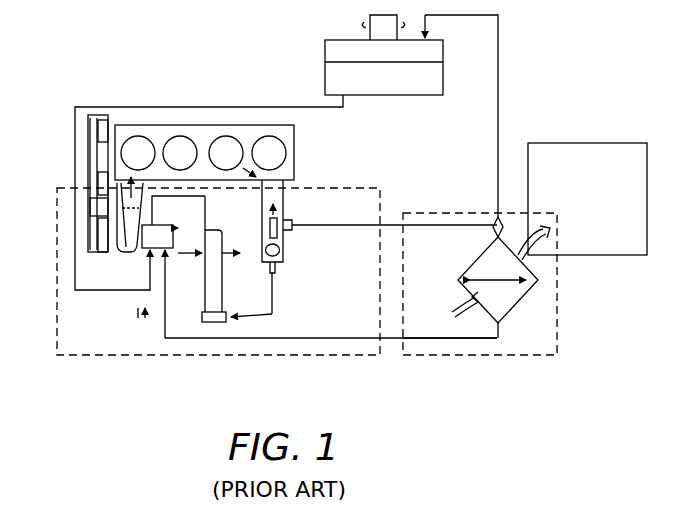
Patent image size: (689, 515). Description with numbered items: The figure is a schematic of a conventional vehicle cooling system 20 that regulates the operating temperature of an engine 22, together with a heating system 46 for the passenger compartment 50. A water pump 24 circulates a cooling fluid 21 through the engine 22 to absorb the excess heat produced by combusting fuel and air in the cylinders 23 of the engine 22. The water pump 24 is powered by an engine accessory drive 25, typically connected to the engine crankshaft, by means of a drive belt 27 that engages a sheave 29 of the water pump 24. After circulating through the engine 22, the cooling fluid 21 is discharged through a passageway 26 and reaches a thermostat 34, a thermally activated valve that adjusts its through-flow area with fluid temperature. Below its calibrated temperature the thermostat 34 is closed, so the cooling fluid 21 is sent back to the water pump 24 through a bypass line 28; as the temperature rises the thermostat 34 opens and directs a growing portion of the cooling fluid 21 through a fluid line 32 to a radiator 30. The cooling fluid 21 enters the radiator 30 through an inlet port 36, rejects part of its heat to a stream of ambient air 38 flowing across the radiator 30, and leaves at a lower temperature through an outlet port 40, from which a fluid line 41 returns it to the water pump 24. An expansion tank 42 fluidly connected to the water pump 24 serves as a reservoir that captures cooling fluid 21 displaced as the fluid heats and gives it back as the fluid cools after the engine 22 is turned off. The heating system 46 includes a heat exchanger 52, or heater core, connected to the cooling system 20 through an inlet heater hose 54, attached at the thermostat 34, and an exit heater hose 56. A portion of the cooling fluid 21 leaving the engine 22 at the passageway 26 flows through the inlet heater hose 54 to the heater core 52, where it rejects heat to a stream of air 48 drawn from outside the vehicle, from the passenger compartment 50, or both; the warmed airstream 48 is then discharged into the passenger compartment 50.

The cooling system 20 is at (357, 185).
The cooling fluid 21 is at (330, 75).
The engine 22 is at (125, 127).
The cylinders 23 is at (178, 135).
The water pump 24 is at (115, 255).
The engine accessory drive 25 is at (97, 148).
The passageway 26 is at (273, 182).
The drive belt 27 is at (88, 225).
The bypass line 28 is at (205, 200).
The sheave 29 is at (88, 246).
The radiator 30 is at (196, 322).
The fluid line 32 is at (273, 290).
The thermostat 34 is at (290, 236).
The inlet port 36 is at (219, 325).
The stream of ambient air 38 is at (184, 235).
The outlet port 40 is at (205, 229).
The fluid line 41 is at (147, 316).
The expansion tank 42 is at (443, 48).
The heating system 46 is at (513, 352).
The stream of air 48 is at (557, 235).
The passenger compartment 50 is at (552, 142).
The heat exchanger 52 is at (522, 308).
The inlet heater hose 54 is at (392, 224).
The exit heater hose 56 is at (440, 338).